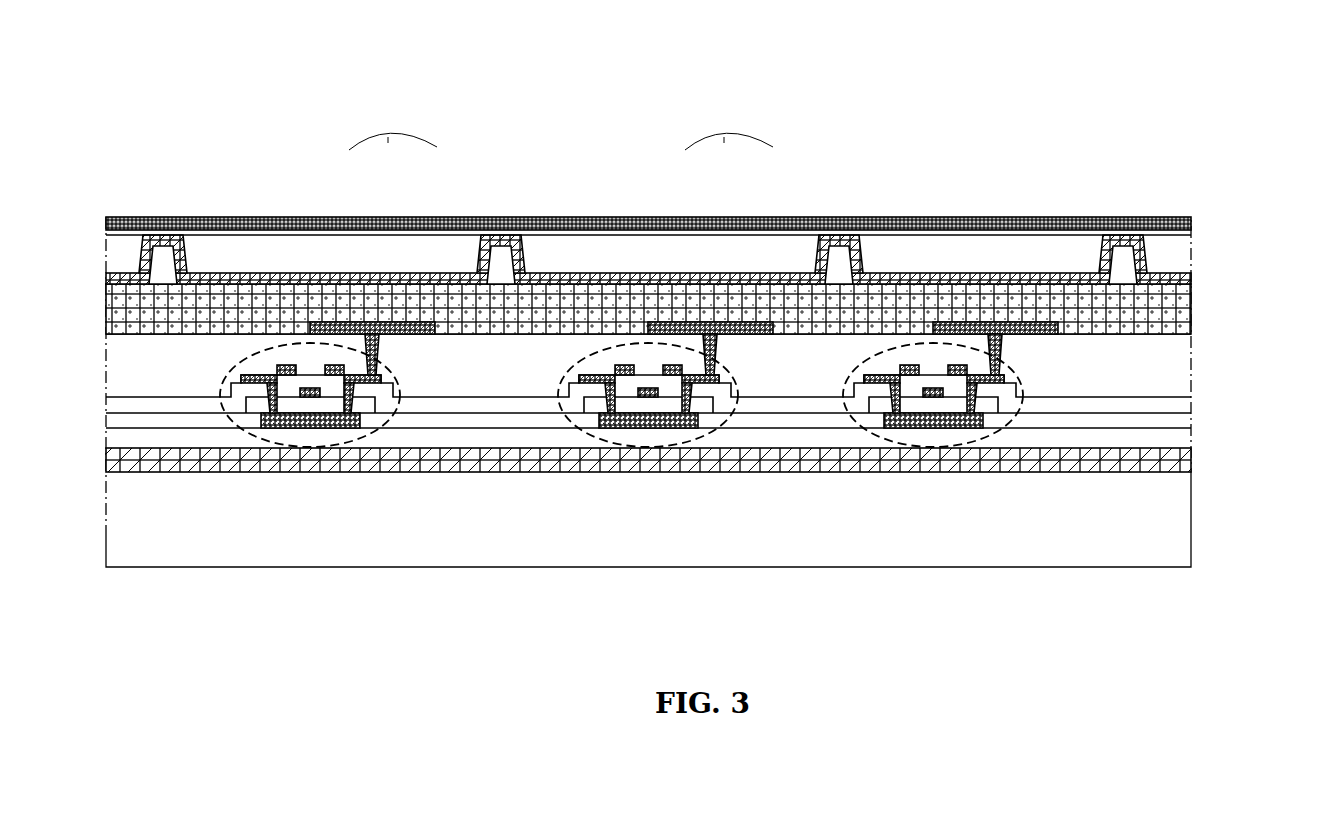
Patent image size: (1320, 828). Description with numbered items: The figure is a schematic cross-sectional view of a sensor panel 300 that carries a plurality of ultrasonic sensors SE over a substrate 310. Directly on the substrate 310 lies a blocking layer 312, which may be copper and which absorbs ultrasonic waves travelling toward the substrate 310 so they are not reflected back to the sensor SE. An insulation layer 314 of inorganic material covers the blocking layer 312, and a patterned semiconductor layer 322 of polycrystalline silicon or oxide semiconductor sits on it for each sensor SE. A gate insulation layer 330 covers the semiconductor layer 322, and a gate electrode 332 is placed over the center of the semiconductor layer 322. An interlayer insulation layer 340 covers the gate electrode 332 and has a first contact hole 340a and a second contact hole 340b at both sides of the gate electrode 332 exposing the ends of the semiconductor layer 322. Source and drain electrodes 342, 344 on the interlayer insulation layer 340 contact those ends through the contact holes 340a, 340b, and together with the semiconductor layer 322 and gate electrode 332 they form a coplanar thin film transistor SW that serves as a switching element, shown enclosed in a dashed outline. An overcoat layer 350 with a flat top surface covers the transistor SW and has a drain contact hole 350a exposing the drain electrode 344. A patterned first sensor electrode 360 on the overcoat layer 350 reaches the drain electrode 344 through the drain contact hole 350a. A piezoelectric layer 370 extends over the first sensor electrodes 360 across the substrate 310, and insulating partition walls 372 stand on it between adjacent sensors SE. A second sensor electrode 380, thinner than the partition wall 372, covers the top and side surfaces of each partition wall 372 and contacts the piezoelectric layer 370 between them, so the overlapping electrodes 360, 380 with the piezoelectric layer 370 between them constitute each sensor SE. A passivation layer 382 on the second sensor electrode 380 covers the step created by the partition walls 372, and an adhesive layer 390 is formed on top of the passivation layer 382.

The sensor panel 300 is at (703, 332).
The substrate 310 is at (1167, 547).
The blocking layer 312 is at (1177, 463).
The insulation layer 314 is at (1173, 440).
The semiconductor layer 322 is at (630, 428).
The gate insulation layer 330 is at (1173, 420).
The gate electrode 332 is at (648, 398).
The interlayer insulation layer 340 is at (1173, 405).
The first contact hole 340a is at (595, 384).
The second contact hole 340b is at (700, 384).
The source electrode 342 is at (603, 418).
The drain electrode 344 is at (693, 420).
The overcoat layer 350 is at (1173, 363).
The drain contact hole 350a is at (723, 370).
The first sensor electrode 360 is at (379, 333).
The piezoelectric layer 370 is at (412, 300).
The partition wall 372 is at (163, 258).
The second sensor electrode 380 is at (326, 275).
The passivation layer 382 is at (547, 255).
The adhesive layer 390 is at (988, 227).
The sensor SE is at (561, 130).
The thin film transistor SW is at (310, 447).